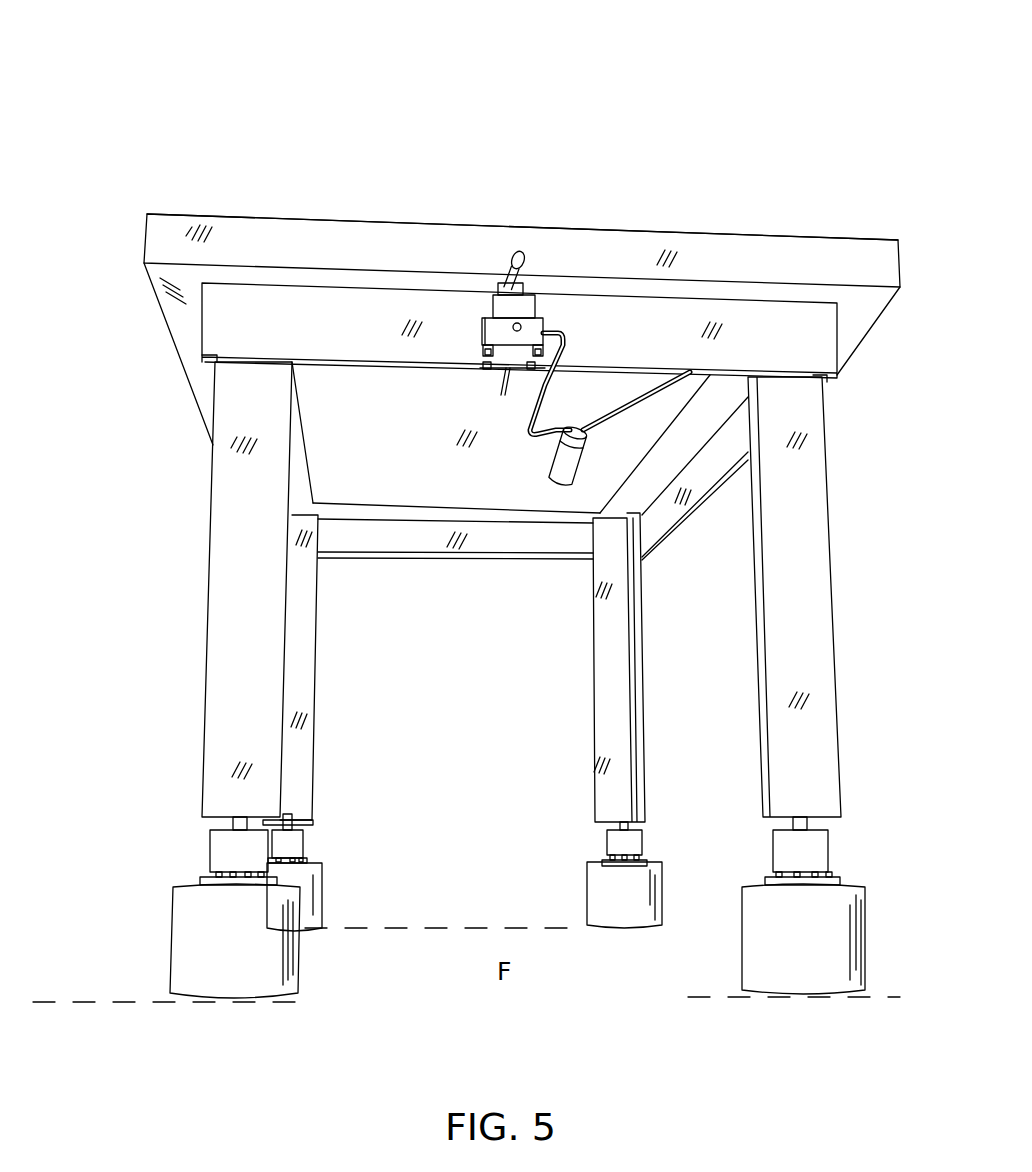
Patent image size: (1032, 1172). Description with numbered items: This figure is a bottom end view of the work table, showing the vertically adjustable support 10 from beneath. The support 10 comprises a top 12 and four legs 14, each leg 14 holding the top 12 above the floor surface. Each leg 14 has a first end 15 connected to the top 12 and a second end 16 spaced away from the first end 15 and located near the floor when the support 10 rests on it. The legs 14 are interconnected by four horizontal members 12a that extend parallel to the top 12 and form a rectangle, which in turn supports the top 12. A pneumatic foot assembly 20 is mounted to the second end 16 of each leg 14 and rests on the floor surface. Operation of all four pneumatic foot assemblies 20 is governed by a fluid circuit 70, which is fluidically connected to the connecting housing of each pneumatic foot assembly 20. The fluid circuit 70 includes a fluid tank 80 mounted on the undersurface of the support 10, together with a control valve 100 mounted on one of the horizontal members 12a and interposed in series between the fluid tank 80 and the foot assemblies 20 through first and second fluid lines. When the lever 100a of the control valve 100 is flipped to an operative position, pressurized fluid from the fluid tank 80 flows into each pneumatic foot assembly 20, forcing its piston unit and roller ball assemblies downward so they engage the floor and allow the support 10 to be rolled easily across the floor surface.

The vertically adjustable support 10 is at (512, 140).
The top 12 is at (737, 235).
The horizontal members 12a is at (420, 570).
The legs 14 is at (220, 605).
The first end 15 is at (217, 362).
The second end 16 is at (207, 817).
The pneumatic foot assembly 20 is at (252, 975).
The fluid circuit 70 is at (478, 385).
The fluid tank 80 is at (547, 483).
The control valve 100 is at (530, 287).
The lever 100a is at (513, 257).